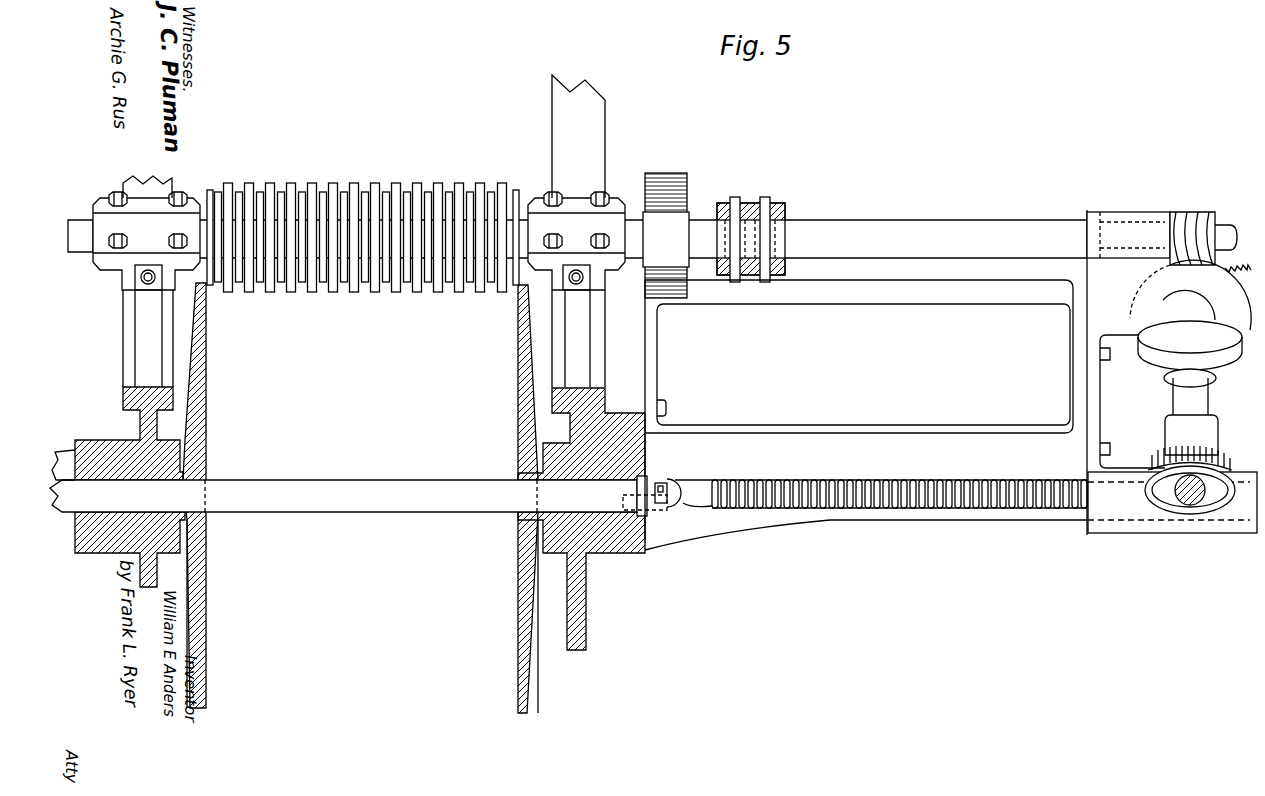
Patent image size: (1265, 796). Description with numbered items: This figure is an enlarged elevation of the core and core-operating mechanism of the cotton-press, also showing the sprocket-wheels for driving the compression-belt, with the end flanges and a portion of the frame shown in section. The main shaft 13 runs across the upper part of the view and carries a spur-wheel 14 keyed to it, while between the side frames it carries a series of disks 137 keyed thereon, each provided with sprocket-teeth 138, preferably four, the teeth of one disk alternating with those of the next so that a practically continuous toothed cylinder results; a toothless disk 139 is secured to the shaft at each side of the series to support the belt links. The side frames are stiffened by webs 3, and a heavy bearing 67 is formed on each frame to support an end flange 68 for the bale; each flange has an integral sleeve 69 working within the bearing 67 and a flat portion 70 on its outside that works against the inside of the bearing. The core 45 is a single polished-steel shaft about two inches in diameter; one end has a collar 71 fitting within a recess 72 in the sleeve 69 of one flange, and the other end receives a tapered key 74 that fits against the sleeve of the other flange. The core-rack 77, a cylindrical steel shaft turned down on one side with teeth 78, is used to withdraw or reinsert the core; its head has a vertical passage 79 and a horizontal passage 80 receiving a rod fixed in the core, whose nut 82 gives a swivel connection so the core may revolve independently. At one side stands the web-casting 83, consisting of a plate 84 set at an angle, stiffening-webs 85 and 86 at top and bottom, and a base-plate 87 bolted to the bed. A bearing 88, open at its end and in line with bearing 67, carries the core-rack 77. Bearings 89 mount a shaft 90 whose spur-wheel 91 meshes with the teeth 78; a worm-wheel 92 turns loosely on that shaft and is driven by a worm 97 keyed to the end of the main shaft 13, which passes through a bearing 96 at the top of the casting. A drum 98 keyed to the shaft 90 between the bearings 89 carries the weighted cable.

The webs 3 is at (125, 362).
The main shaft 13 is at (80, 222).
The spur-wheel 14 is at (688, 186).
The core 45 is at (343, 496).
The bearing 67 is at (98, 446).
The end flange 68 is at (521, 409).
The sleeve 69 is at (73, 523).
The flat portion 70 is at (188, 537).
The collar 71 is at (653, 497).
The recess 72 is at (647, 550).
The tapered key 74 is at (67, 475).
The core-rack 77 is at (935, 512).
The teeth 78 is at (822, 484).
The vertical passage 79 is at (688, 478).
The horizontal passage 80 is at (652, 478).
The nut 82 is at (668, 500).
The web-casting 83 is at (899, 514).
The plate 84 is at (859, 410).
The stiffening-web 85 is at (863, 354).
The stiffening-web 86 is at (945, 426).
The base-plate 87 is at (648, 353).
The bearing 88 is at (1172, 512).
The bearings 89 is at (1206, 436).
The shaft 90 is at (1200, 406).
The spur-wheel 91 is at (1168, 465).
The worm-wheel 92 is at (1190, 295).
The bearing 96 is at (1128, 223).
The worm 97 is at (1193, 216).
The drum 98 is at (1190, 354).
The disks 137 is at (283, 245).
The sprocket-teeth 138 is at (470, 190).
The disk 139 is at (212, 282).